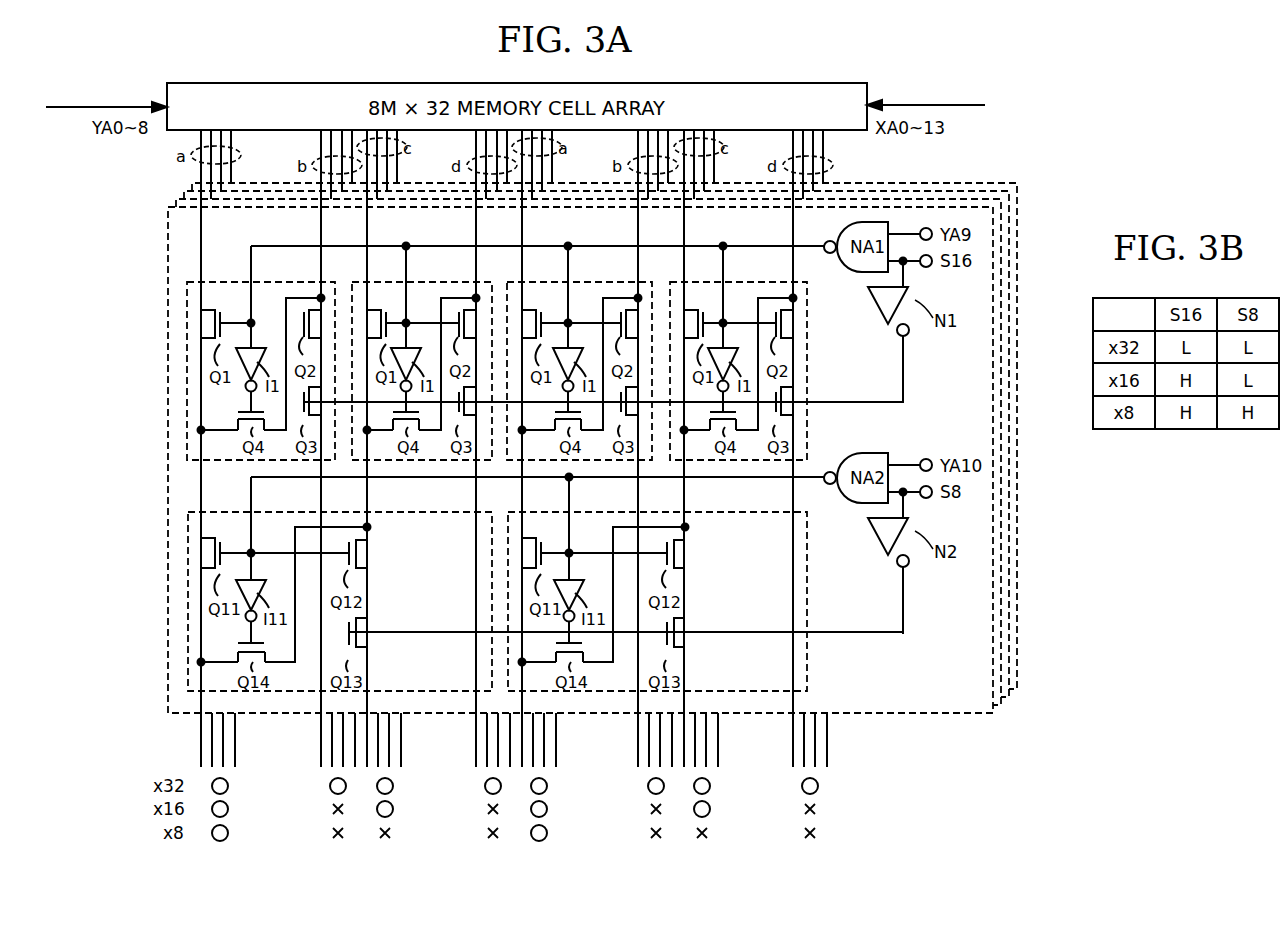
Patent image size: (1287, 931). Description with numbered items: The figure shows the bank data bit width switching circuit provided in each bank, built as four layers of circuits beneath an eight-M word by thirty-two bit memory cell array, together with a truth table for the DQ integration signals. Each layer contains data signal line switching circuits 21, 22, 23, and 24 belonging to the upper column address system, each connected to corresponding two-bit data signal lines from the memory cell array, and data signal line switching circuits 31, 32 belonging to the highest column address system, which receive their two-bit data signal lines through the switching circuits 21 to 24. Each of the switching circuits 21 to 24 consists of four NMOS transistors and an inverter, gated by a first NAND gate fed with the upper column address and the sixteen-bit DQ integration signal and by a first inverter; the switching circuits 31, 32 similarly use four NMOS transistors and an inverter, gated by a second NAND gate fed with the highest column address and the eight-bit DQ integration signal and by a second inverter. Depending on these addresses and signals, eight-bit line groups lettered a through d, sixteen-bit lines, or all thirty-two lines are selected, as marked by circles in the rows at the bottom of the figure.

The data signal line switching circuit 21 is at (263, 282).
The data signal line switching circuit 22 is at (419, 282).
The data signal line switching circuit 23 is at (581, 282).
The data signal line switching circuit 24 is at (733, 282).
The data signal line switching circuit 31 is at (264, 512).
The data signal line switching circuit 32 is at (582, 512).